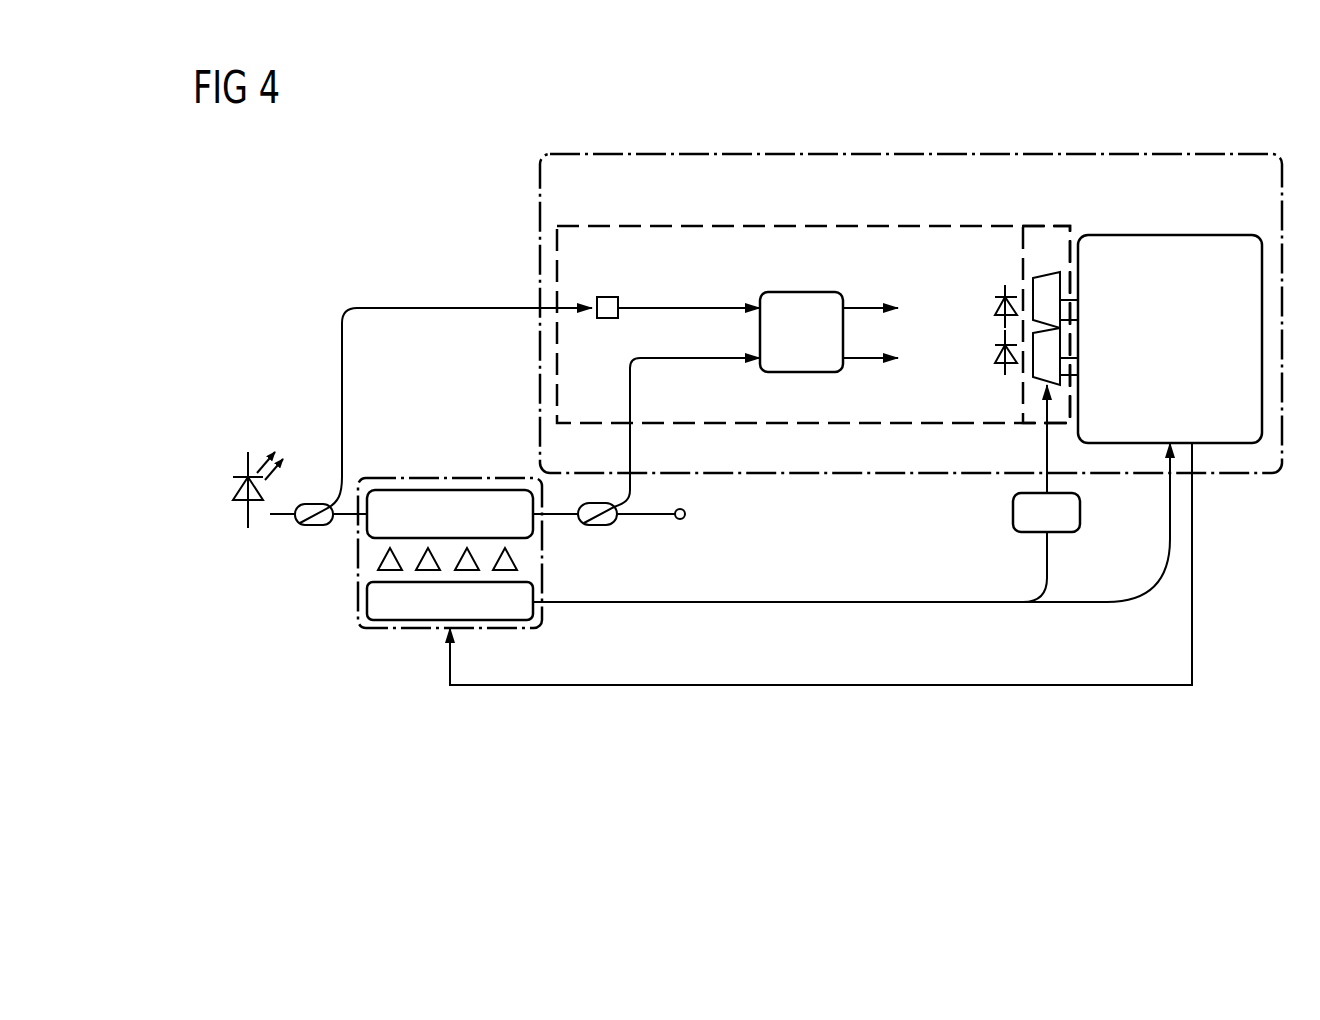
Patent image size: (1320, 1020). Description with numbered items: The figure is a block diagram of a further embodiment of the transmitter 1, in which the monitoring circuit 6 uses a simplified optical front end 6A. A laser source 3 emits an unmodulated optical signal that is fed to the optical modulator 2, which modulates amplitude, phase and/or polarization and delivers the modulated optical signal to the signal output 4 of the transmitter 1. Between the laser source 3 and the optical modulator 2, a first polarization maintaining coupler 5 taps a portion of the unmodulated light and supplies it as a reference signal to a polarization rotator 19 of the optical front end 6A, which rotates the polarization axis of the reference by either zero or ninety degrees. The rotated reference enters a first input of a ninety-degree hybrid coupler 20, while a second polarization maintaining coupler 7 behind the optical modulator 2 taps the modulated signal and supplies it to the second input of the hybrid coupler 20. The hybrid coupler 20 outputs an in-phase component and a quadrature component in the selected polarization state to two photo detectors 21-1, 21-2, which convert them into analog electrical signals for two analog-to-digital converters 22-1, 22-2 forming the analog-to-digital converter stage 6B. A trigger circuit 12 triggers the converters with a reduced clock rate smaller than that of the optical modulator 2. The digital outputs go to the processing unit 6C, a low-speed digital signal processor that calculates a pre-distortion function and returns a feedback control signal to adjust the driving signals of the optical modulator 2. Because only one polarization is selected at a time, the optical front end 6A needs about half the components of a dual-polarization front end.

The transmitter 1 is at (1218, 135).
The optical modulator 2 is at (457, 478).
The laser source 3 is at (235, 488).
The signal output 4 is at (680, 520).
The first polarization maintaining coupler 5 is at (312, 527).
The monitoring unit 6 is at (975, 153).
The optical front end 6A is at (718, 226).
The analog-to-digital converter stage 6B is at (1042, 228).
The processing unit 6C is at (1158, 235).
The second polarization maintaining coupler 7 is at (600, 528).
The trigger circuit 12 is at (1082, 515).
The polarization rotator 19 is at (607, 319).
The 90-degree hybrid coupler 20 is at (805, 292).
The photo detector 21-1 is at (993, 305).
The photo detector 21-2 is at (993, 355).
The analog-to-digital converter 22-1 is at (1063, 315).
The analog-to-digital converter 22-2 is at (1063, 375).